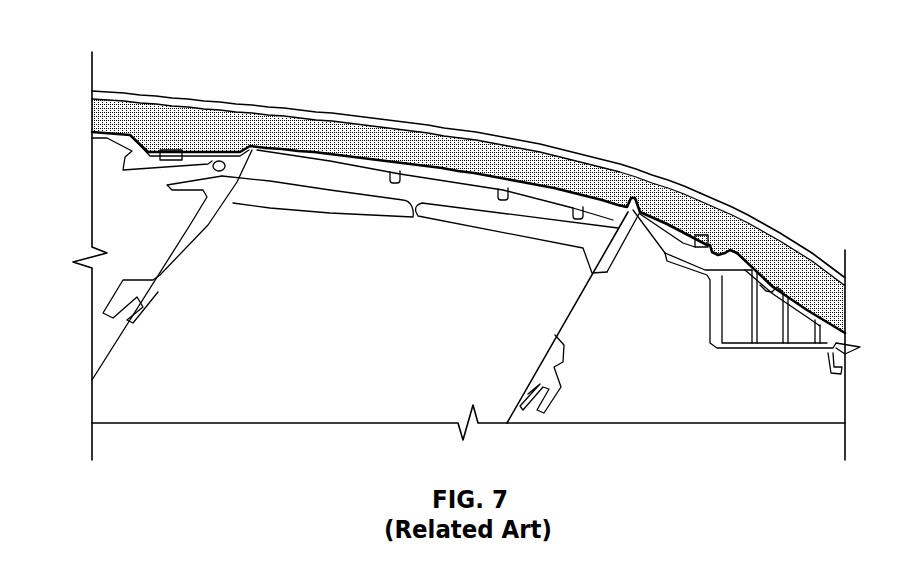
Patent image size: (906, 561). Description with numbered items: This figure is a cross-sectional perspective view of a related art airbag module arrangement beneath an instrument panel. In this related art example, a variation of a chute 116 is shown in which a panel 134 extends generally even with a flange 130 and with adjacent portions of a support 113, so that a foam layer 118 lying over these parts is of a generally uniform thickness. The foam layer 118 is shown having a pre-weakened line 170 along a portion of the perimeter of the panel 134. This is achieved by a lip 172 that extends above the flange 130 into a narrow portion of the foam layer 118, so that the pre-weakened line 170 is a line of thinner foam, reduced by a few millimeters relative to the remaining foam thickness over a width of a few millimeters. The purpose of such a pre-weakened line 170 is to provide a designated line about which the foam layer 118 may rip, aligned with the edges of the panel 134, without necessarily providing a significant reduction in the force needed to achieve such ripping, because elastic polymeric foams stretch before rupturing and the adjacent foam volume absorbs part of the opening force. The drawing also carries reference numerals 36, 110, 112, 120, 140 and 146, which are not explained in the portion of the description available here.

The clip 36 is at (231, 150).
The trim structure 110 is at (132, 199).
The roof 112 is at (797, 241).
The support 113 is at (733, 257).
The chute 116 is at (582, 305).
The foam layer 118 is at (467, 157).
The outer panel 120 is at (377, 118).
The flange 130 is at (694, 243).
The panel 134 is at (391, 161).
The panel 140 is at (412, 215).
The bump 146 is at (614, 210).
The pre-weakened line 170 is at (644, 177).
The lip 172 is at (633, 222).